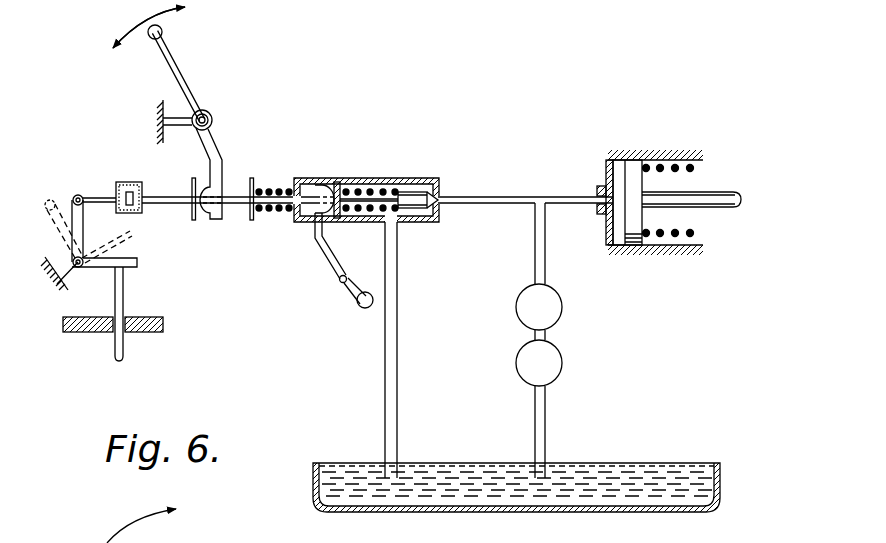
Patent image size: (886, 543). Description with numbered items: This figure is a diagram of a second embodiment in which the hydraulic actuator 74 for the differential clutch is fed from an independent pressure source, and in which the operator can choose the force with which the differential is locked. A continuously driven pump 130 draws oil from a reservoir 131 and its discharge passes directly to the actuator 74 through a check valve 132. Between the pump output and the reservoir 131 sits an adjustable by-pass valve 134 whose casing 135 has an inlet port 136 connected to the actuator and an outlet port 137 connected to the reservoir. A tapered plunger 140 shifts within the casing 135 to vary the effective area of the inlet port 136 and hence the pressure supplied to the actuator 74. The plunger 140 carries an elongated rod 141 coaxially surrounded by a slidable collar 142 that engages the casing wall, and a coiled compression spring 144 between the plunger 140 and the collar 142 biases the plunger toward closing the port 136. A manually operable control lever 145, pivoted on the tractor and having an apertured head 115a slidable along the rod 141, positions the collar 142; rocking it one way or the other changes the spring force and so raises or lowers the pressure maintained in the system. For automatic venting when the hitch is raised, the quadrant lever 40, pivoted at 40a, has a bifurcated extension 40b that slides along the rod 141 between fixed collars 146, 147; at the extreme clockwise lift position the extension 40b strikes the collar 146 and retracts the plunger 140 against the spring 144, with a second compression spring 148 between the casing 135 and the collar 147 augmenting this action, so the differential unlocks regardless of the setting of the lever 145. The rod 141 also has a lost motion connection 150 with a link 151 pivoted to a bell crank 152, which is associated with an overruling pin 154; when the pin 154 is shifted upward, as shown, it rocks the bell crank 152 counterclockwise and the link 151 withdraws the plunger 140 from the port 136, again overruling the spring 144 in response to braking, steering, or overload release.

The quadrant lever 40 is at (185, 86).
The lever pivot 40a is at (194, 127).
The bifurcated extension 40b is at (207, 213).
The hydraulic actuator 74 is at (655, 139).
The piston 115a is at (320, 186).
The pump 130 is at (562, 362).
The reservoir 131 is at (488, 493).
The check valve 132 is at (562, 306).
The adjustable by-pass valve 134 is at (428, 166).
The casing 135 is at (368, 178).
The inlet port 136 is at (441, 204).
The outlet port 137 is at (398, 228).
The tapered plunger 140 is at (420, 198).
The rod 141 is at (168, 206).
The collar 142 is at (337, 184).
The coiled compression spring 144 is at (388, 191).
The control lever 145 is at (333, 266).
The fixed collar 146 is at (198, 160).
The fixed collar 147 is at (251, 178).
The second compression spring 148 is at (279, 189).
The lost motion connection 150 is at (124, 182).
The link 151 is at (80, 194).
The bell crank 152 is at (83, 241).
The overruling pin 154 is at (124, 306).